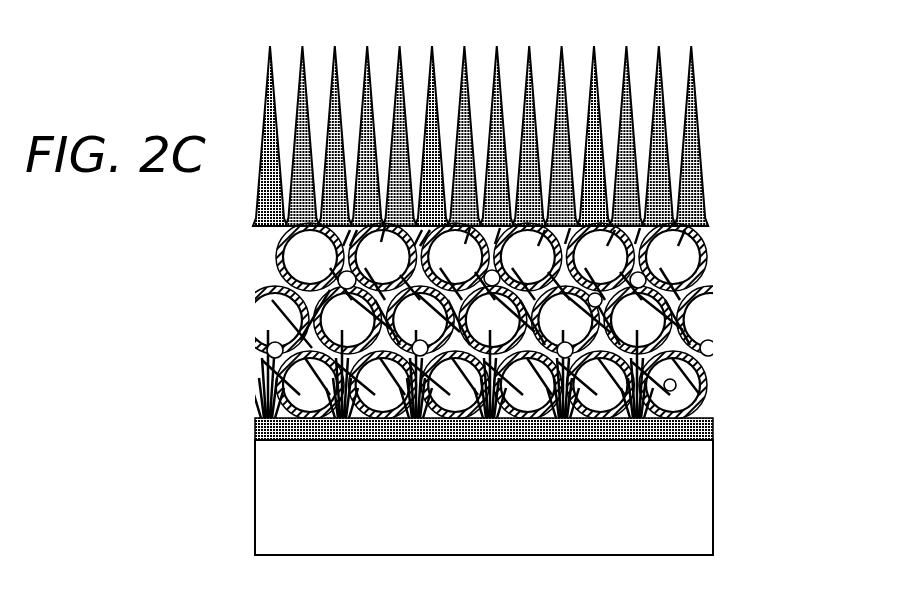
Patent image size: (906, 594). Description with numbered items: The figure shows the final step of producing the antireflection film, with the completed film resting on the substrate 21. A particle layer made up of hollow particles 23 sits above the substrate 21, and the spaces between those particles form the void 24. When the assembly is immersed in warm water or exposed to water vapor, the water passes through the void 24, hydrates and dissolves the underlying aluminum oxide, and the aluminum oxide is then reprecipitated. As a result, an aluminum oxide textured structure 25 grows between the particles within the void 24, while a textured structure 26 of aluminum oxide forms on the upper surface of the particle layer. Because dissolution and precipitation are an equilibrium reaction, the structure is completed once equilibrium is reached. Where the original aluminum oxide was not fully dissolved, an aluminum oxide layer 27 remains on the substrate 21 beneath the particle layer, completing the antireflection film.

The substrate 21 is at (705, 515).
The hollow particles 23 is at (519, 321).
The void 24 is at (690, 307).
The aluminum oxide textured structure 25 is at (527, 332).
The textured structure 26 is at (725, 45).
The aluminum oxide layer 27 is at (713, 433).